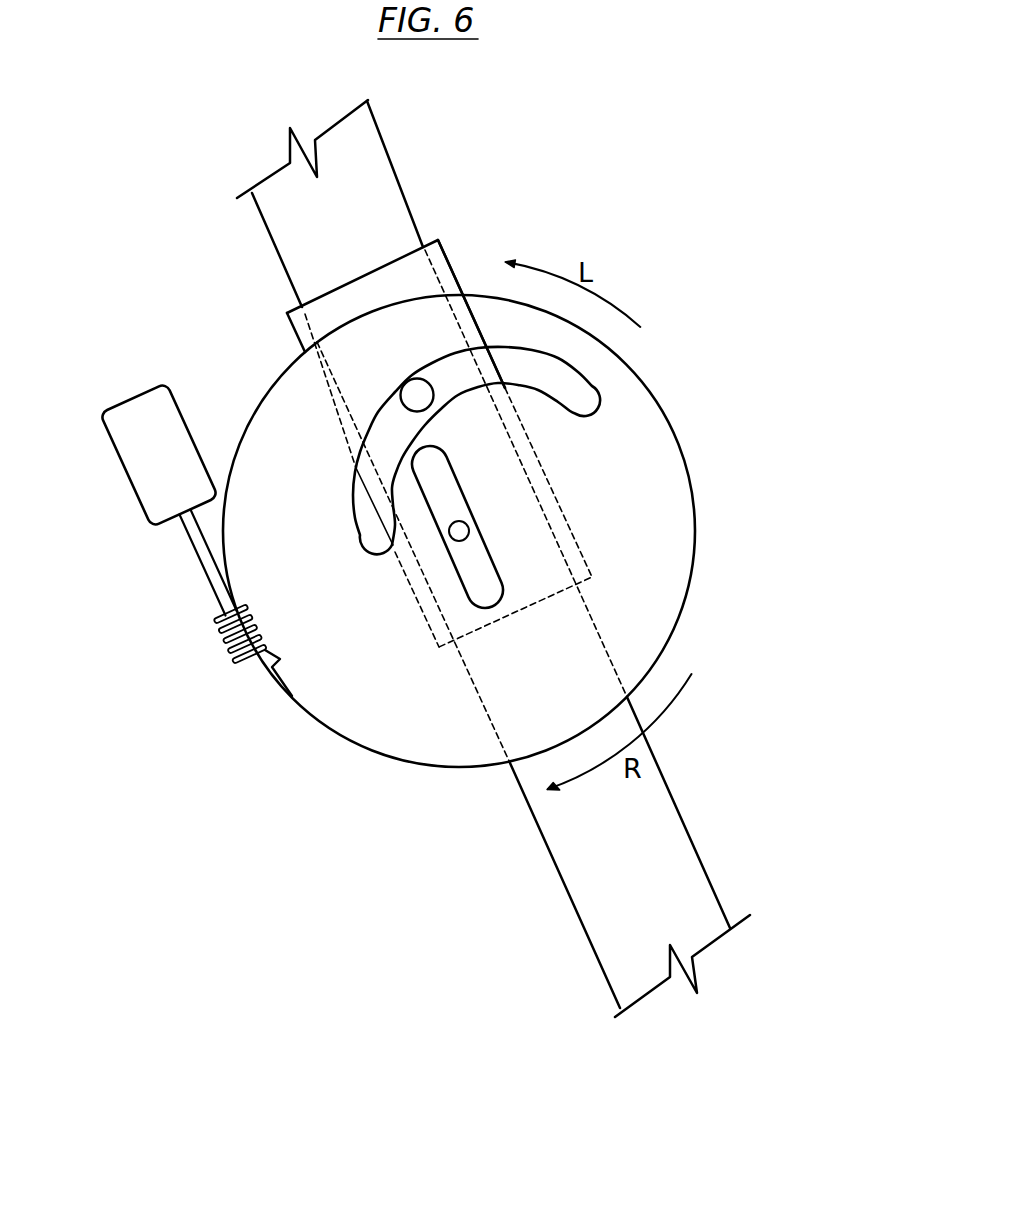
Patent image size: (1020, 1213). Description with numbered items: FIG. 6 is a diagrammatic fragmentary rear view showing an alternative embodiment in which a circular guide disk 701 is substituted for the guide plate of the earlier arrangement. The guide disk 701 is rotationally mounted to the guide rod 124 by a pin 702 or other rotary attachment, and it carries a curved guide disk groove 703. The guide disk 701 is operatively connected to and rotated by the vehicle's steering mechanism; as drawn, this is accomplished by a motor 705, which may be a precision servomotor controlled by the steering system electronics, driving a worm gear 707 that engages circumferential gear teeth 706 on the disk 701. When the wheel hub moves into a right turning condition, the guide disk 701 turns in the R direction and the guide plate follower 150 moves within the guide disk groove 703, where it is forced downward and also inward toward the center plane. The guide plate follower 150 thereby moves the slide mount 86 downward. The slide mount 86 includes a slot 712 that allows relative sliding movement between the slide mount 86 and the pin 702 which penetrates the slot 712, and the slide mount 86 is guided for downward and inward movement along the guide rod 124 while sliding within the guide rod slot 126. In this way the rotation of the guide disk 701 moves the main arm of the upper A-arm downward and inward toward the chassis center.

The guide rod 124 is at (383, 152).
The slide mount 86 is at (450, 260).
The guide rod slot 126 is at (328, 290).
The guide disk 701 is at (270, 388).
The guide disk groove 703 is at (582, 393).
The guide plate follower 150 is at (418, 395).
The pin 702 is at (458, 532).
The slot 712 is at (490, 553).
The motor 705 is at (133, 502).
The worm gear 707 is at (232, 657).
The circumferential gear teeth 706 is at (262, 663).